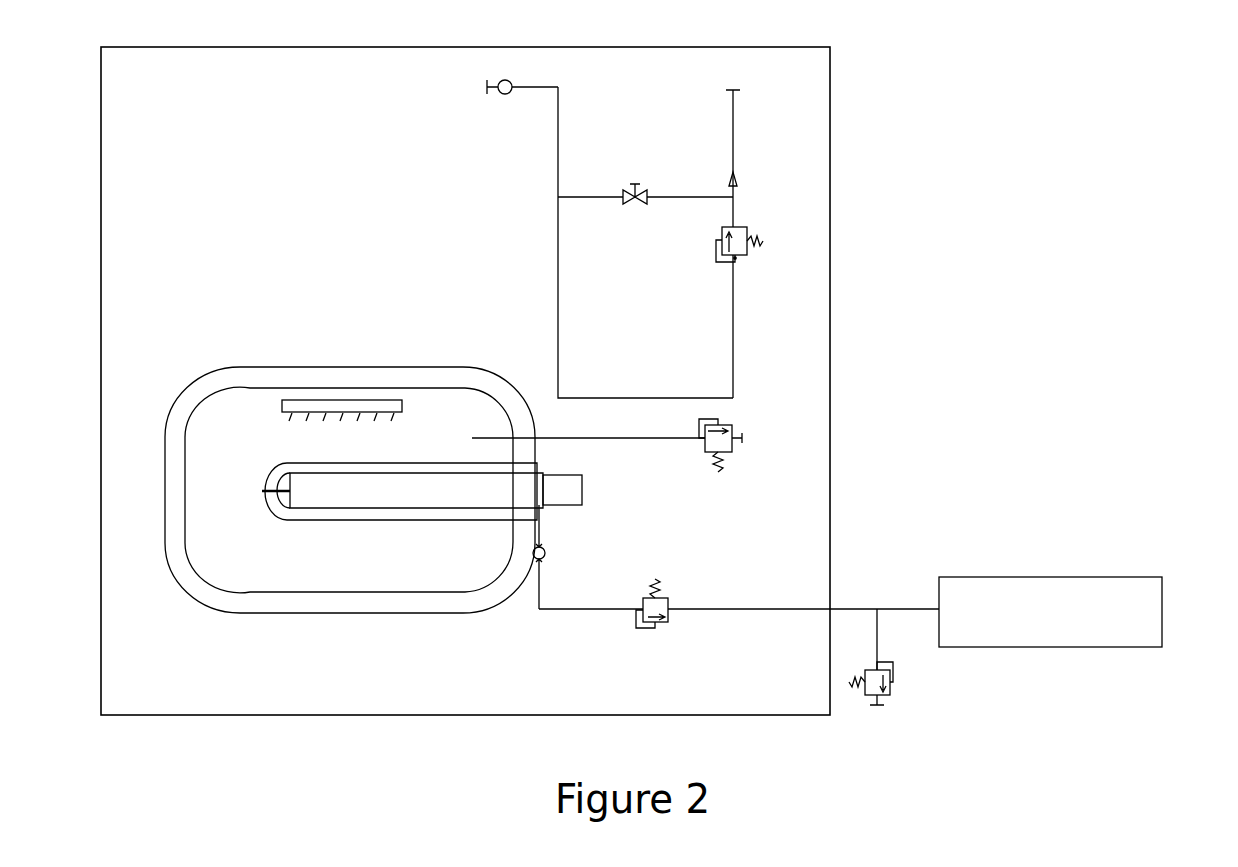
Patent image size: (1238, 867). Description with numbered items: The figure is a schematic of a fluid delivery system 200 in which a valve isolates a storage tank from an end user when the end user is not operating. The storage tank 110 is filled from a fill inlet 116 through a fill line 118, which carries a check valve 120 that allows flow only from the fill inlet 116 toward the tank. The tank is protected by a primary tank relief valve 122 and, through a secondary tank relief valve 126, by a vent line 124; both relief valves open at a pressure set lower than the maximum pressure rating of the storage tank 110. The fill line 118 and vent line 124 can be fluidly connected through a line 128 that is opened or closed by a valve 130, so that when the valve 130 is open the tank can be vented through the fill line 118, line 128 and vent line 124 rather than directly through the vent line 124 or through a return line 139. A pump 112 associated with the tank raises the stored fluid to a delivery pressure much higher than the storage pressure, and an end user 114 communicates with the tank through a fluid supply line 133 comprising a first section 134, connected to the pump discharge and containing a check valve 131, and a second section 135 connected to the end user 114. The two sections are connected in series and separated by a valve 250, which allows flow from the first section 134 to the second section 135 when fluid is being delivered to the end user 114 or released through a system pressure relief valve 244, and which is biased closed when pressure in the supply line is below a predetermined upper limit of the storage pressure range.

The fluid delivery system 200 is at (832, 286).
The storage tank 110 is at (215, 598).
The pump 112 is at (340, 497).
The end user 114 is at (1108, 577).
The fill inlet 116 is at (487, 88).
The fill line 118 is at (558, 152).
The check valve 120 is at (500, 93).
The primary tank relief valve 122 is at (737, 425).
The vent line 124 is at (733, 140).
The secondary tank relief valve 126 is at (740, 228).
The line 128 is at (578, 197).
The valve 130 is at (648, 197).
The check valve 131 is at (546, 553).
The fluid supply line 133 is at (913, 608).
The first section 134 is at (582, 610).
The second section 135 is at (725, 609).
The return line 139 is at (580, 438).
The system pressure relief valve 244 is at (888, 695).
The valve 250 is at (670, 617).